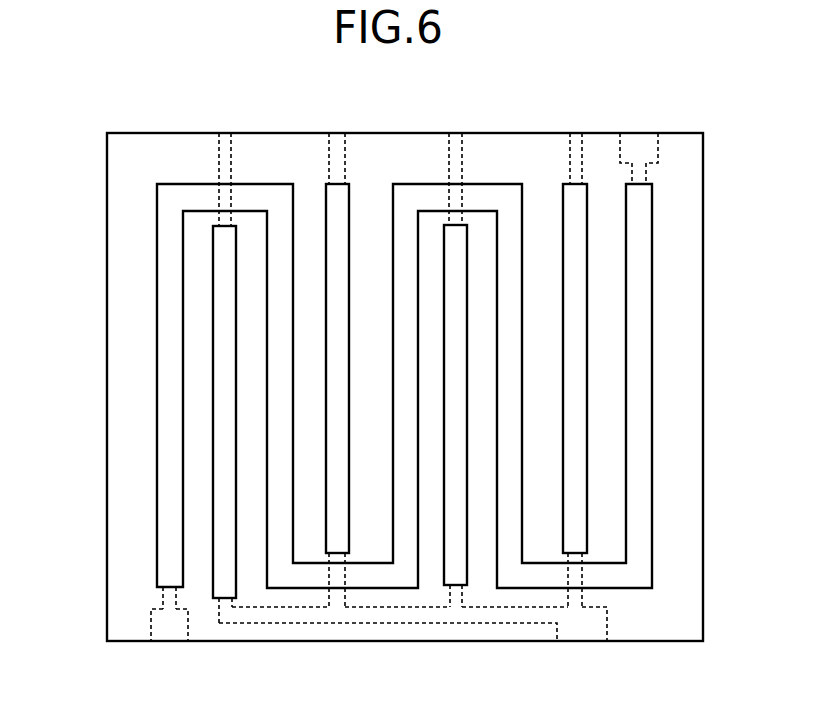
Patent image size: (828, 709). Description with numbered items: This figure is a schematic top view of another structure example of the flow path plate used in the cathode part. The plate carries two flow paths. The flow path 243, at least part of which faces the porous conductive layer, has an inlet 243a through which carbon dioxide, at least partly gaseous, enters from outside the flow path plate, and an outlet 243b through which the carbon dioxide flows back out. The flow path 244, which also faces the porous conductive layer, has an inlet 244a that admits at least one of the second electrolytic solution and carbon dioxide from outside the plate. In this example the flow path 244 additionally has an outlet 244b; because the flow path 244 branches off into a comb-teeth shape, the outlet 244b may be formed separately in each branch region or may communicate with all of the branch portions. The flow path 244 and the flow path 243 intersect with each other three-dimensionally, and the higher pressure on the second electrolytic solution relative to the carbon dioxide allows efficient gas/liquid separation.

The flow path 243 is at (157, 445).
The inlet 243a is at (188, 645).
The outlet 243b is at (658, 133).
The flow path 244 is at (213, 237).
The inlet 244a is at (607, 645).
The outlet 244b is at (345, 133).